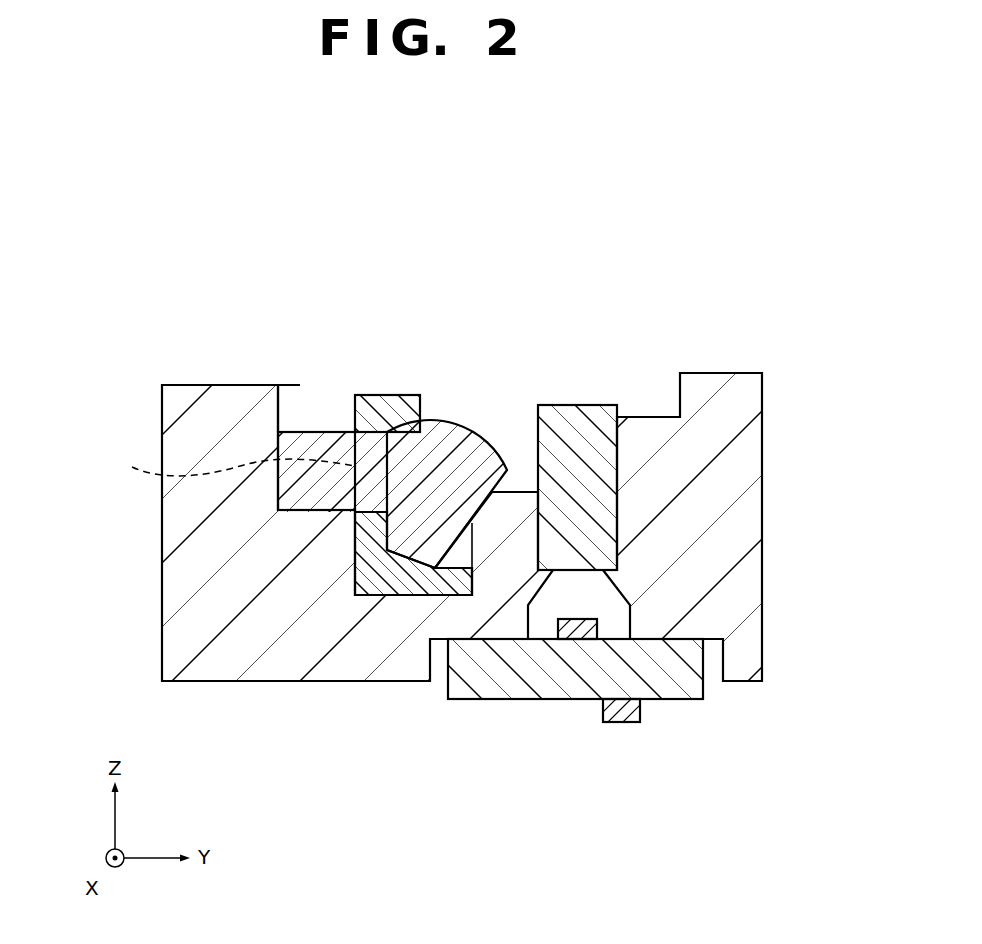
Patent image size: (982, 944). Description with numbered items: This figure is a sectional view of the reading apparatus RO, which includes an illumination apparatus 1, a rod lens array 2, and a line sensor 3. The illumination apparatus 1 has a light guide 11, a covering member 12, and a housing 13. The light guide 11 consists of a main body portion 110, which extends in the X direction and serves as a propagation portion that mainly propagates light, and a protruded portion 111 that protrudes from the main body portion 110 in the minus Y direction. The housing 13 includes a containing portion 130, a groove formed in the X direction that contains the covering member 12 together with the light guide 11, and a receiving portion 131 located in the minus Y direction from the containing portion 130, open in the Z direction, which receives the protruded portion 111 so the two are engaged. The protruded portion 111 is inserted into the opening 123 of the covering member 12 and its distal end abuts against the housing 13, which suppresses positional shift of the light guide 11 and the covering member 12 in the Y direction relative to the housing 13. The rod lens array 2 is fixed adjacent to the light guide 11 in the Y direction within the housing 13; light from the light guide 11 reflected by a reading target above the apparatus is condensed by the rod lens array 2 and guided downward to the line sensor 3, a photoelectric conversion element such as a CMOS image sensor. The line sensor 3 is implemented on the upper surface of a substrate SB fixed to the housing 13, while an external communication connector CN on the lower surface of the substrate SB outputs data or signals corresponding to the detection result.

The illumination apparatus 1 is at (576, 195).
The light guide 11 is at (353, 396).
The main body portion 110 is at (453, 430).
The protruded portion 111 is at (326, 438).
The covering member 12 is at (383, 395).
The housing 13 is at (187, 528).
The containing portion 130 is at (392, 605).
The receiving portion 131 is at (298, 389).
The opening 123 is at (219, 470).
The rod lens array 2 is at (580, 418).
The line sensor 3 is at (572, 625).
The substrate SB is at (508, 677).
The external communication connector CN is at (623, 722).
The reading apparatus RO is at (176, 200).